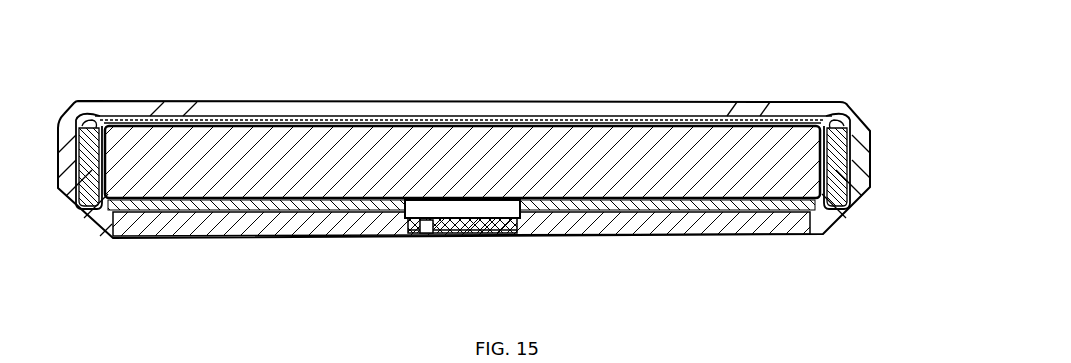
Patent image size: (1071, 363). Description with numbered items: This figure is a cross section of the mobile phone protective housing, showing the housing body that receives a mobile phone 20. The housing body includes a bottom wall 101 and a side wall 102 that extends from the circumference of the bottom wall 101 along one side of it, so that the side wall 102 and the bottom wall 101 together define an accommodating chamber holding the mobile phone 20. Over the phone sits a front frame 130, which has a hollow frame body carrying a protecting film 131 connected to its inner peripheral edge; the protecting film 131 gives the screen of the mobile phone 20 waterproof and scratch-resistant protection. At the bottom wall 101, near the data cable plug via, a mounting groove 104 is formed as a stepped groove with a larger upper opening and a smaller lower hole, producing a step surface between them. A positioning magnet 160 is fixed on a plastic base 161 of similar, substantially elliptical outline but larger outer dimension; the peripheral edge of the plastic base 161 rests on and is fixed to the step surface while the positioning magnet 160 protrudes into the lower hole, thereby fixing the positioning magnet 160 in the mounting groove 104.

The mobile phone 20 is at (527, 148).
The protecting film 131 is at (632, 127).
The front frame 130 is at (840, 113).
The side wall 102 is at (860, 145).
The bottom wall 101 is at (790, 230).
The mounting groove 104 is at (492, 208).
The positioning magnet 160 is at (453, 220).
The plastic base 161 is at (430, 227).